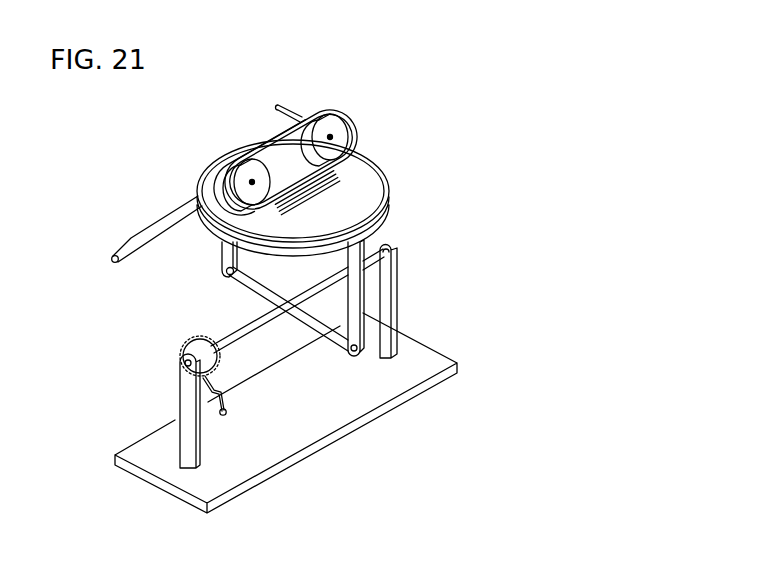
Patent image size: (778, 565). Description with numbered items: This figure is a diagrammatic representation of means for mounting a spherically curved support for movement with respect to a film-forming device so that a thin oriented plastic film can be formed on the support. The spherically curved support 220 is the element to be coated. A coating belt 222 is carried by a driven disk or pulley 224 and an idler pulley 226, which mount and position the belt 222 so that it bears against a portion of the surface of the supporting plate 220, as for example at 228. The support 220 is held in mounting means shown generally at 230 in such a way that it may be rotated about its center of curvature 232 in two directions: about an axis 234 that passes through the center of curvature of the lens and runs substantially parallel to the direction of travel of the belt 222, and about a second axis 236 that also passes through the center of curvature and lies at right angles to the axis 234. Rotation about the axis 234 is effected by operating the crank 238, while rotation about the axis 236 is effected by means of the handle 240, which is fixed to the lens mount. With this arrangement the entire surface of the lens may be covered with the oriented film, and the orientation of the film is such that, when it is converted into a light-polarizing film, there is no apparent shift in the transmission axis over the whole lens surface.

The spherically curved support 220 is at (372, 180).
The coating belt 222 is at (313, 114).
The driven disk or pulley 224 is at (342, 130).
The idler pulley 226 is at (243, 181).
The portion of the surface of the supporting plate 228 is at (268, 176).
The mounting means 230 is at (233, 247).
The center of curvature 232 is at (290, 307).
The axis 234 is at (237, 337).
The second axis 236 is at (315, 320).
The crank 238 is at (220, 410).
The handle 240 is at (118, 250).